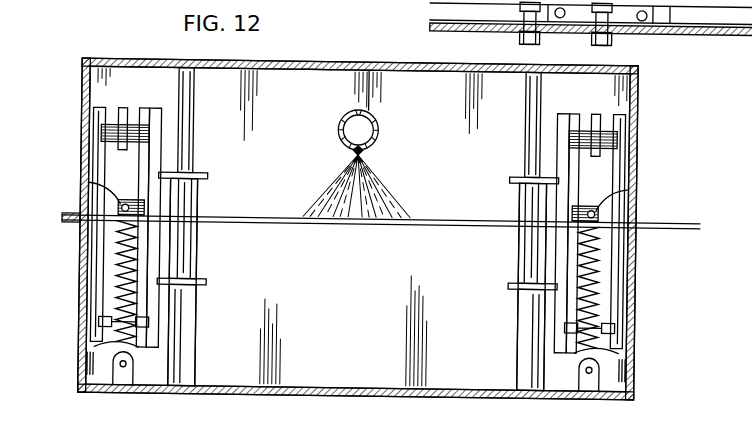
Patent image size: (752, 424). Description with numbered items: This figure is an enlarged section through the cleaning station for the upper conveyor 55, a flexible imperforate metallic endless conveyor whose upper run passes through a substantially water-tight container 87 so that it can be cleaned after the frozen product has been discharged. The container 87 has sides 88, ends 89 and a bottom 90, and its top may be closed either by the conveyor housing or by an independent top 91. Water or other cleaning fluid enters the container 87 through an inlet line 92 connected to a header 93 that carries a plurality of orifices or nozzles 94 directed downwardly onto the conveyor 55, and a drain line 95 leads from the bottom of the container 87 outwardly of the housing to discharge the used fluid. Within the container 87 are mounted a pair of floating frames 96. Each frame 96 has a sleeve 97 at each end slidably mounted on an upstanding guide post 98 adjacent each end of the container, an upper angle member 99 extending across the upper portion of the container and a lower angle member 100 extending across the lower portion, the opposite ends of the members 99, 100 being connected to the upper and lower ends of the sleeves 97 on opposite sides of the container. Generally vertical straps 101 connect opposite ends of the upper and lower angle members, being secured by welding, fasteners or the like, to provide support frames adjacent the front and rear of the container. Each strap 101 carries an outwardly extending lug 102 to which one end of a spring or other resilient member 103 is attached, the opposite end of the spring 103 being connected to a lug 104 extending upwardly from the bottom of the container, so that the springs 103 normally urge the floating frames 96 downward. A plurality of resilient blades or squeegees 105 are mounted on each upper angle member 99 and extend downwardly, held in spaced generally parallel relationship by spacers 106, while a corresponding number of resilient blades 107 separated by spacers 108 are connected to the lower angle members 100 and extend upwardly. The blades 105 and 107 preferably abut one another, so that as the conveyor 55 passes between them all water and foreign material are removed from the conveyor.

The upper conveyor 55 is at (668, 219).
The container 87 is at (642, 84).
The sides 88 is at (82, 136).
The ends 89 is at (396, 62).
The bottom 90 is at (392, 388).
The independent top 91 is at (313, 72).
The inlet line 92 is at (608, 35).
The header 93 is at (337, 129).
The nozzles 94 is at (352, 153).
The drain line 95 is at (519, 34).
The floating frames 96 is at (199, 198).
The sleeve 97 is at (186, 245).
The guide post 98 is at (193, 104).
The upper angle member 99 is at (163, 155).
The lower angle member 100 is at (173, 300).
The straps 101 is at (172, 267).
The lug 102 is at (88, 186).
The spring 103 is at (112, 347).
The lug 104 is at (112, 373).
The resilient blades 105 is at (143, 110).
The spacers 106 is at (100, 135).
The resilient blades 107 is at (96, 263).
The spacers 108 is at (108, 318).